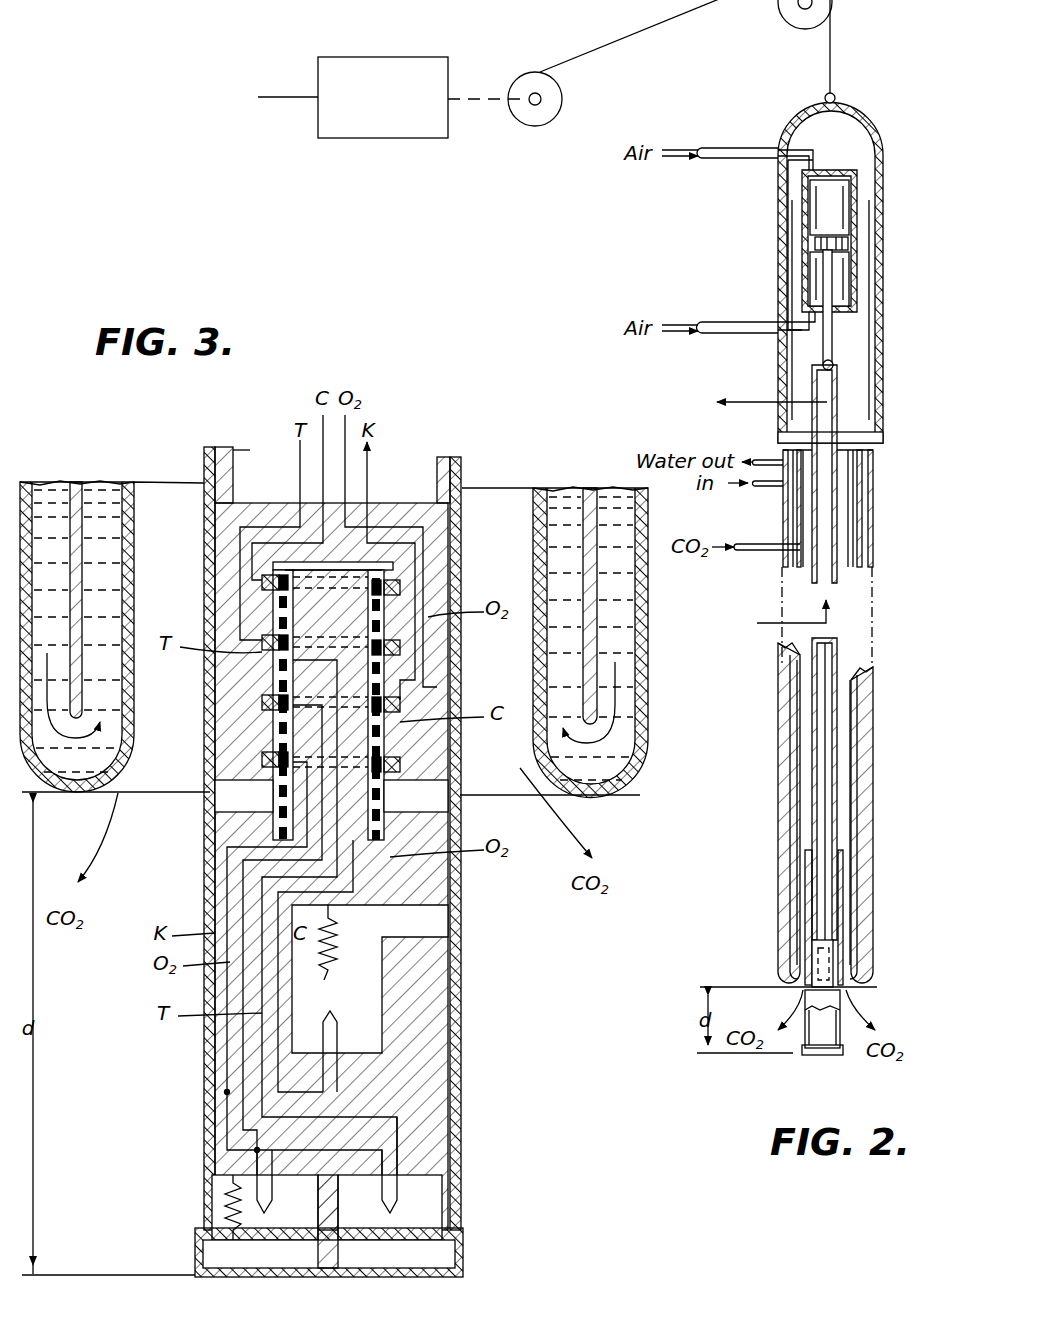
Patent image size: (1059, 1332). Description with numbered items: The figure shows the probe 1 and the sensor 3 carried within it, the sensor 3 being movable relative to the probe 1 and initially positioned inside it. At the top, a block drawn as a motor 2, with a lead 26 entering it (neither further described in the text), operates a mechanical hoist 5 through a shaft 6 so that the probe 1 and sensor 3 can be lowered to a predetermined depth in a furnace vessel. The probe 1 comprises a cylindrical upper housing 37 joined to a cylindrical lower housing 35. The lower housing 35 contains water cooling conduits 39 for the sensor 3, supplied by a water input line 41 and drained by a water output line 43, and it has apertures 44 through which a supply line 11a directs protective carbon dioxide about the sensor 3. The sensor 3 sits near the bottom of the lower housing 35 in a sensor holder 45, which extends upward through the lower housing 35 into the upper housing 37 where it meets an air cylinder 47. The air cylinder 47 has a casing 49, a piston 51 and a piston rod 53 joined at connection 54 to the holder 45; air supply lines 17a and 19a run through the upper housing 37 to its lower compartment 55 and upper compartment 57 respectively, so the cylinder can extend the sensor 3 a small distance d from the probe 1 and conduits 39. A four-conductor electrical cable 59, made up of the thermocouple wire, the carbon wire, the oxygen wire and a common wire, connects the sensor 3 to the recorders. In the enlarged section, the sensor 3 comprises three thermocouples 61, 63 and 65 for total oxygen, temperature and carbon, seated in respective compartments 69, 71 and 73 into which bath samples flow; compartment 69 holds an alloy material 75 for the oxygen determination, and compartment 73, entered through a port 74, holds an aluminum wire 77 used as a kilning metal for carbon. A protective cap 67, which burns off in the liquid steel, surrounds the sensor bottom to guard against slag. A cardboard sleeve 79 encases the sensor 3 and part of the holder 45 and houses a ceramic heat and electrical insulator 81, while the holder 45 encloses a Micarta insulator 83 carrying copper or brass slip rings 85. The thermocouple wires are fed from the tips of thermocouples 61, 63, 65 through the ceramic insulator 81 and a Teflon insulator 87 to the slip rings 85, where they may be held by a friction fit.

In FIG. 2, the probe 1 is at (675, 310).
In FIG. 2, the motor 2 is at (358, 57).
In FIG. 3, the sensor 3 is at (165, 1077).
In FIG. 2, the sensor 3 is at (790, 1060).
In FIG. 2, the mechanical hoist 5 is at (608, 38).
In FIG. 2, the shaft 6 is at (478, 98).
In FIG. 2, the CO2 supply line 11a is at (762, 556).
In FIG. 2, the air supply line 17a is at (722, 322).
In FIG. 2, the air supply line 19a is at (733, 148).
In FIG. 2, the motor lead 26 is at (277, 97).
In FIG. 3, the cylindrical lower housing 35 is at (27, 478).
In FIG. 2, the cylindrical lower housing 35 is at (780, 810).
In FIG. 2, the cylindrical upper housing 37 is at (866, 108).
In FIG. 3, the water cooling conduits 39 is at (103, 482).
In FIG. 2, the water cooling conduits 39 is at (874, 520).
In FIG. 2, the water input line 41 is at (763, 488).
In FIG. 2, the water output line 43 is at (757, 460).
In FIG. 3, the apertures 44 is at (125, 773).
In FIG. 2, the apertures 44 is at (800, 990).
In FIG. 3, the sensor holder 45 is at (460, 470).
In FIG. 2, the sensor holder 45 is at (843, 385).
In FIG. 2, the air cylinder 47 is at (858, 188).
In FIG. 2, the casing 49 is at (805, 196).
In FIG. 2, the piston 51 is at (817, 244).
In FIG. 2, the piston rod 53 is at (825, 284).
In FIG. 2, the connection 54 is at (836, 363).
In FIG. 2, the lower compartment 55 is at (843, 272).
In FIG. 2, the upper compartment 57 is at (843, 212).
In FIG. 3, the 4-conductor electrical cable 59 is at (298, 475).
In FIG. 2, the 4-conductor electrical cable 59 is at (746, 400).
In FIG. 3, the thermocouple 61 is at (268, 1205).
In FIG. 3, the thermocouple 63 is at (384, 1205).
In FIG. 3, the thermocouple 65 is at (333, 1013).
In FIG. 3, the protective cap 67 is at (373, 1278).
In FIG. 2, the protective cap 67 is at (818, 1056).
In FIG. 3, the compartment 69 is at (220, 1230).
In FIG. 3, the compartment 71 is at (432, 1203).
In FIG. 3, the compartment 73 is at (378, 965).
In FIG. 3, the port 74 is at (455, 916).
In FIG. 3, the alloy material 75 is at (246, 1268).
In FIG. 3, the aluminum wire 77 is at (318, 955).
In FIG. 3, the cardboard sleeve 79 is at (210, 892).
In FIG. 2, the cardboard sleeve 79 is at (806, 878).
In FIG. 3, the heat and electrical insulator 81 is at (430, 1060).
In FIG. 3, the electrical insulator 83 is at (425, 525).
In FIG. 3, the slip rings 85 is at (400, 586).
In FIG. 3, the Teflon insulator 87 is at (215, 797).